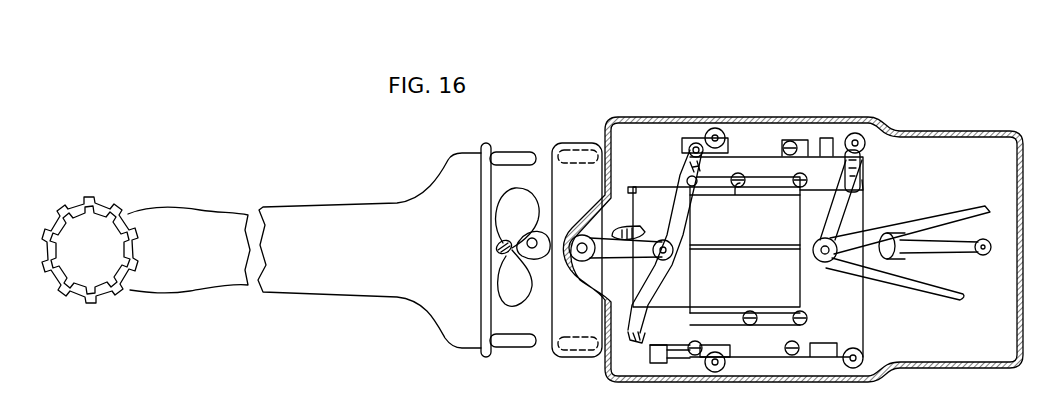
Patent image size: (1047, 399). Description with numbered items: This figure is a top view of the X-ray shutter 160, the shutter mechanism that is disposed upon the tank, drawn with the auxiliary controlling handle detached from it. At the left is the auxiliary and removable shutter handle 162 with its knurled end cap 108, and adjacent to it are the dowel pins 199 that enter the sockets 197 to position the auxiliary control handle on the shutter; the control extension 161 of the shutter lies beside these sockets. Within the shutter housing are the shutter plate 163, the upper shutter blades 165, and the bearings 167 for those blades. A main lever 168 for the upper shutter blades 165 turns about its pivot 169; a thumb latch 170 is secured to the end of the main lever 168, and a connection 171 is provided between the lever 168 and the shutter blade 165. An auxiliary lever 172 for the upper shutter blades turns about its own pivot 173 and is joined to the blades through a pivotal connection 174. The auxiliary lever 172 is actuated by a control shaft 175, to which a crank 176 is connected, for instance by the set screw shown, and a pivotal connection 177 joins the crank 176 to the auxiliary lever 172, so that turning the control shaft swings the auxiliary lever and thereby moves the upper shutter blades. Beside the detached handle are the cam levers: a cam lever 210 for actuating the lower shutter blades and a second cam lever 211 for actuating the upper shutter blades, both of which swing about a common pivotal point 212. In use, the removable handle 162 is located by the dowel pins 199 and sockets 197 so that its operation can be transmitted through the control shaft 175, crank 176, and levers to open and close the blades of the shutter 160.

The cap and tube 108 is at (170, 214).
The X-ray shutter 160 is at (820, 117).
The control extension 161 is at (578, 143).
The auxiliary and removable shutter handle 162 is at (357, 205).
The shutter plate 163 is at (862, 180).
The upper shutter blades 165 is at (648, 340).
The bearings 167 is at (783, 148).
The main lever 168 is at (838, 226).
The pivot 169 is at (822, 262).
The thumb latch 170 is at (948, 298).
The connection 171 is at (860, 166).
The auxiliary lever 172 is at (672, 228).
The pivot 173 is at (672, 255).
The pivotal connection 174 is at (690, 162).
The control shaft 175 is at (578, 262).
The crank 176 is at (594, 240).
The pivotal connection 177 is at (630, 228).
The sockets 197 is at (558, 151).
The dowel pins 199 is at (508, 152).
The cam lever 210 is at (524, 203).
The second cam lever 211 is at (512, 296).
The pivotal point 212 is at (498, 250).